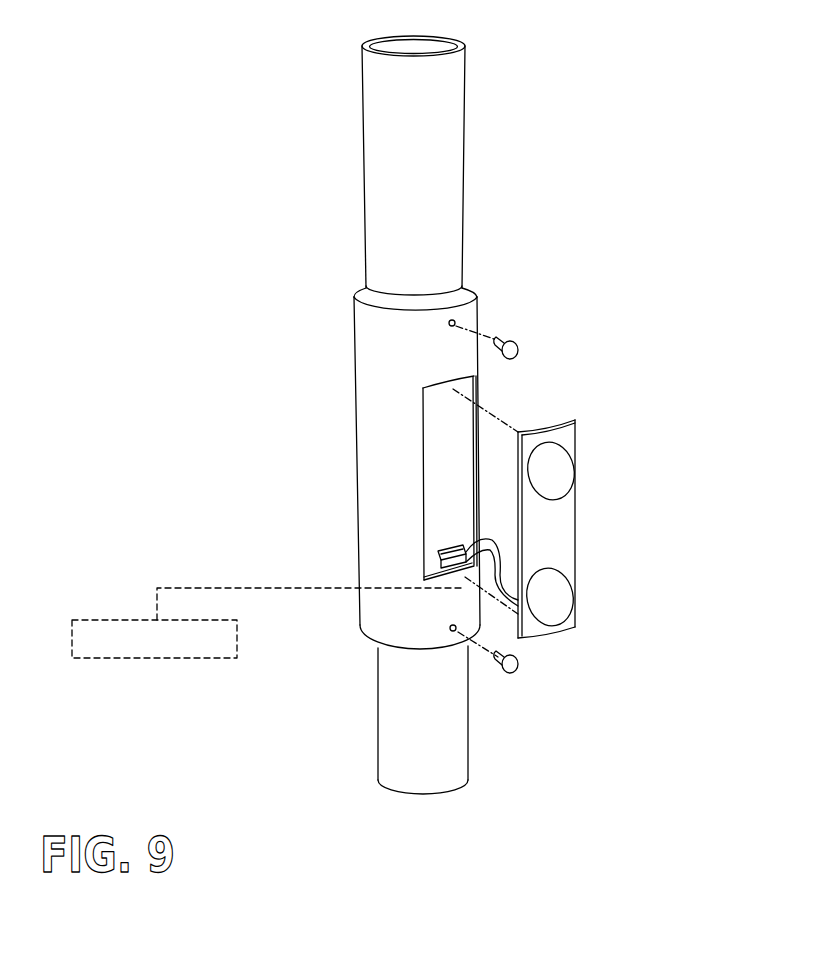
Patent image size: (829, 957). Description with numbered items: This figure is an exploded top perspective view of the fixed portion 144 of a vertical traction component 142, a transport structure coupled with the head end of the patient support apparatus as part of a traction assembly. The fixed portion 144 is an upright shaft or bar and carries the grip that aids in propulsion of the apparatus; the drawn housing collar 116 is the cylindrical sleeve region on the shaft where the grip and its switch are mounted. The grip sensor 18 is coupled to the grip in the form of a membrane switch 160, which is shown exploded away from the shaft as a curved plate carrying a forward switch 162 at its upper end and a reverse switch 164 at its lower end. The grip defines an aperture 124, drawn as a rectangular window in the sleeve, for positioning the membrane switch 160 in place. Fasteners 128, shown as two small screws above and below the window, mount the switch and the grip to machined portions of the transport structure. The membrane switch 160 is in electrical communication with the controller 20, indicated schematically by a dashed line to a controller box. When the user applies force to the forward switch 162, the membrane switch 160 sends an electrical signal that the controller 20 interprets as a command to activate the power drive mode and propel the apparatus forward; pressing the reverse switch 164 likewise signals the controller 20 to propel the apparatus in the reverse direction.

The vertical traction component 142 is at (297, 239).
The fixed portion 144 is at (430, 272).
The housing collar 116 is at (383, 372).
The aperture 124 is at (448, 481).
The fasteners 128 is at (518, 350).
The grip sensor 18 is at (604, 497).
The membrane switch 160 is at (550, 530).
The forward switch 162 is at (553, 473).
The reverse switch 164 is at (556, 598).
The controller 20 is at (150, 658).